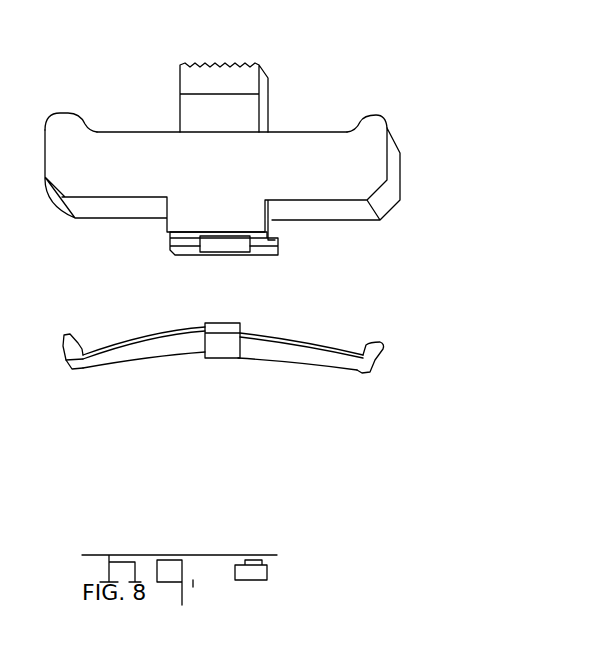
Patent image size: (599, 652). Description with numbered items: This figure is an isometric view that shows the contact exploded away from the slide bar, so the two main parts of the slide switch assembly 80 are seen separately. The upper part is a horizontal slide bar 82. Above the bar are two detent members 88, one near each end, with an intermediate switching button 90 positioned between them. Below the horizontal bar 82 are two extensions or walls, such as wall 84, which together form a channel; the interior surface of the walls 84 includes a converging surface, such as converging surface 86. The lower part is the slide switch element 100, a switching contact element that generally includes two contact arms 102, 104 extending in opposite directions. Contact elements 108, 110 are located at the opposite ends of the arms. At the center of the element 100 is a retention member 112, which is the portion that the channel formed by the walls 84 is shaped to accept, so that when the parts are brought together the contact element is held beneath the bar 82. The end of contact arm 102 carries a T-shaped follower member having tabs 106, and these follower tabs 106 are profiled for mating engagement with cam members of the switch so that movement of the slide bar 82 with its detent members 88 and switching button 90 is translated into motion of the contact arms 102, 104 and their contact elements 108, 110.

The slide switch assembly 80 is at (284, 148).
The horizontal slide bar 82 is at (127, 150).
The extensions or walls 84 is at (180, 215).
The converging surface 86 is at (240, 257).
The detent members 88 is at (62, 111).
The switching button 90 is at (260, 65).
The slide switch element 100 is at (289, 384).
The contact arm 102 is at (148, 352).
The contact arm 104 is at (315, 358).
The tabs 106 is at (68, 367).
The contact element 108 is at (86, 370).
The contact element 110 is at (413, 358).
The retention member 112 is at (240, 325).